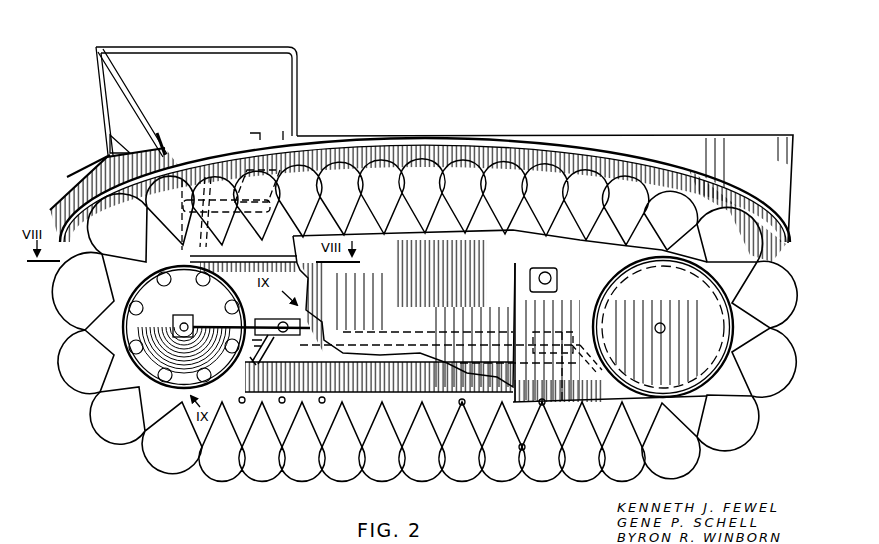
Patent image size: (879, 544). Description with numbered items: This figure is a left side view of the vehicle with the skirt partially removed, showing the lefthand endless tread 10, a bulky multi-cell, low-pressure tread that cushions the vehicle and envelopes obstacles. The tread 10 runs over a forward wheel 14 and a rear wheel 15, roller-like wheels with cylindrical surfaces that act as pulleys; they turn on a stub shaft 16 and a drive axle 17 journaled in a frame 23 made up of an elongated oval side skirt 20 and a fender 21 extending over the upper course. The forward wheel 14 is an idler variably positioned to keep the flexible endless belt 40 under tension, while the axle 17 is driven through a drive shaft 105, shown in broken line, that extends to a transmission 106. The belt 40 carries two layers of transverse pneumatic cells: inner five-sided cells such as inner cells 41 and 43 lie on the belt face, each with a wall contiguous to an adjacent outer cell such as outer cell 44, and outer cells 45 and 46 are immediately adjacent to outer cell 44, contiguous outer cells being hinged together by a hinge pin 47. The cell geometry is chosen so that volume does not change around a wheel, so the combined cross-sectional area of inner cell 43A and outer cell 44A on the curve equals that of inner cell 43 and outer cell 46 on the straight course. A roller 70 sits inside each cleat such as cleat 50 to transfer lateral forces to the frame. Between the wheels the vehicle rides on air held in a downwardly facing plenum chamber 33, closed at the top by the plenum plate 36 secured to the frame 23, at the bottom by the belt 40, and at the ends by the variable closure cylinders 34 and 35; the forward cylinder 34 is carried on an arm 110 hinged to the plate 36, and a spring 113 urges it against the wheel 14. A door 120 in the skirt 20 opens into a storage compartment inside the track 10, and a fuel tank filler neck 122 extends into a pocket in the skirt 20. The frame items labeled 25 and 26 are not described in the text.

The endless tread 10 is at (424, 337).
The forward wheel 14 is at (239, 268).
The rear wheel 15 is at (663, 316).
The stub shaft 16 is at (184, 319).
The drive axle 17 is at (661, 323).
The side skirt 20 is at (396, 258).
The fender 21 is at (603, 143).
The frame 23 is at (646, 129).
The frame 25 is at (216, 45).
The support strut 26 is at (158, 131).
The plenum chamber 33 is at (420, 387).
The forward cylinder 34 is at (241, 385).
The rear cylinder 35 is at (593, 378).
The plenum plate 36 is at (318, 395).
The endless belt 40 is at (358, 400).
The inner cell 41 is at (463, 426).
The inner cell 43 is at (530, 417).
The inner cell 43A is at (103, 333).
The outer cell 44 is at (508, 459).
The outer cell 44A is at (106, 303).
The outer cell 45 is at (462, 457).
The outer cell 46 is at (557, 457).
The hinge pin 47 is at (520, 449).
The cleat 50 is at (410, 407).
The roller 70 is at (300, 397).
The drive shaft 105 is at (435, 336).
The transmission 106 is at (578, 320).
The arm 110 is at (263, 360).
The spring 113 is at (252, 318).
The door 120 is at (526, 268).
The filler neck 122 is at (558, 272).